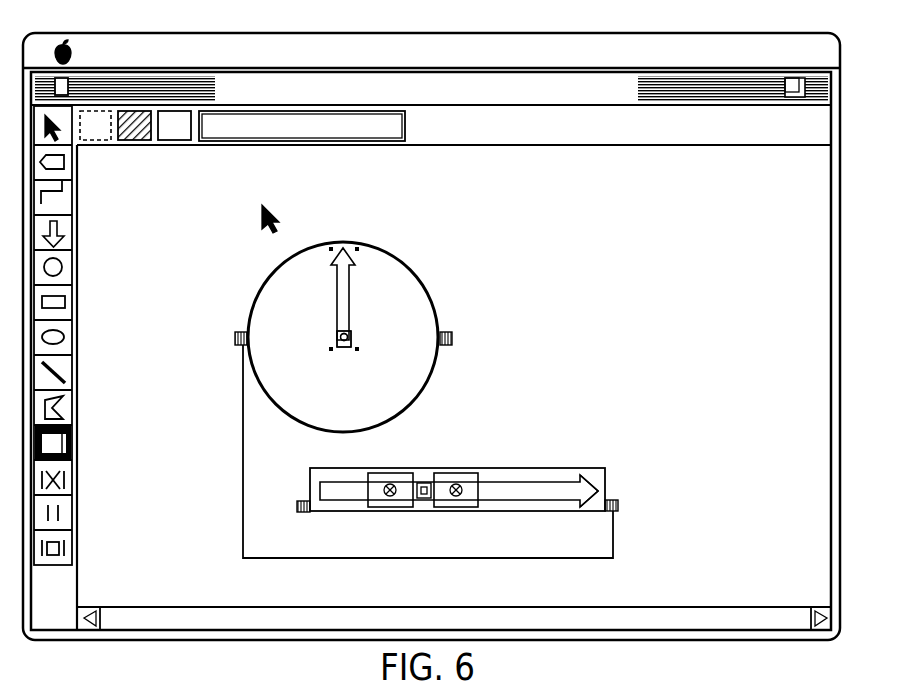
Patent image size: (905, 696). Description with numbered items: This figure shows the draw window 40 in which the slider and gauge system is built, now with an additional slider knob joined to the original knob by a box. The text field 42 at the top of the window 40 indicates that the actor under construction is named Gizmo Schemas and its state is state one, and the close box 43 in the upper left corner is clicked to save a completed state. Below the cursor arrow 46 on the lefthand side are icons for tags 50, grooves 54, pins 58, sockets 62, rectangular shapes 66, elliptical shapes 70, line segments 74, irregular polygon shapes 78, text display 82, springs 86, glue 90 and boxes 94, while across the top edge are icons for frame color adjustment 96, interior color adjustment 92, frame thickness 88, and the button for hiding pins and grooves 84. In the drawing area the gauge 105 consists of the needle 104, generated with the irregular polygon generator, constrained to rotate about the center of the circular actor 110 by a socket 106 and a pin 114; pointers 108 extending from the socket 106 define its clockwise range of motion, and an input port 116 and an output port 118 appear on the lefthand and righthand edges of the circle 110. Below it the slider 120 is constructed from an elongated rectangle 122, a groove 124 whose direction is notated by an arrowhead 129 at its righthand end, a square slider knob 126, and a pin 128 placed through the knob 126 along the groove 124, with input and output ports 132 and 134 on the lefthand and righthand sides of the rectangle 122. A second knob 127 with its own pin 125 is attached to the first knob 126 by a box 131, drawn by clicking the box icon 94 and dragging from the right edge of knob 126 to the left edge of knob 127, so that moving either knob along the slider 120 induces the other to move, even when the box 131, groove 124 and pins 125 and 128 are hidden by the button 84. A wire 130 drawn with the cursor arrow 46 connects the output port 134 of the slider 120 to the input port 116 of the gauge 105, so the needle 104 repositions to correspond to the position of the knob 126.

The draw window 40 is at (616, 642).
The text field 42 is at (491, 104).
The close box 43 is at (61, 86).
The cursor arrow 46 is at (61, 118).
The tags icon 50 is at (64, 162).
The grooves icon 54 is at (62, 200).
The pins icon 58 is at (65, 229).
The sockets icon 62 is at (62, 267).
The rectangular shapes icon 66 is at (65, 302).
The elliptical shapes icon 70 is at (64, 337).
The line segments icon 74 is at (65, 372).
The irregular polygon shapes icon 78 is at (63, 408).
The text display icon 82 is at (66, 443).
The pin and groove hiding button 84 is at (400, 138).
The springs icon 86 is at (64, 478).
The frame thickness icon 88 is at (178, 125).
The glue icon 90 is at (62, 515).
The interior color adjustment icon 92 is at (134, 125).
The boxes icon 94 is at (64, 548).
The frame color adjustment icon 96 is at (99, 125).
The needle 104 is at (352, 300).
The gauge 105 is at (349, 323).
The socket 106 is at (353, 351).
The pointers 108 is at (342, 334).
The circular actor 110 is at (437, 368).
The pin 114 is at (341, 352).
The input port 116 is at (237, 337).
The output port 118 is at (452, 338).
The slider 120 is at (465, 454).
The elongated rectangle 122 is at (500, 512).
The groove 124 is at (520, 480).
The pin 125 is at (457, 480).
The square slider knob 126 is at (368, 505).
The second knob 127 is at (455, 506).
The pin 128 is at (391, 497).
The arrowhead 129 is at (598, 470).
The wire 130 is at (613, 538).
The box 131 is at (424, 481).
The input port 132 is at (300, 503).
The output port 134 is at (618, 504).